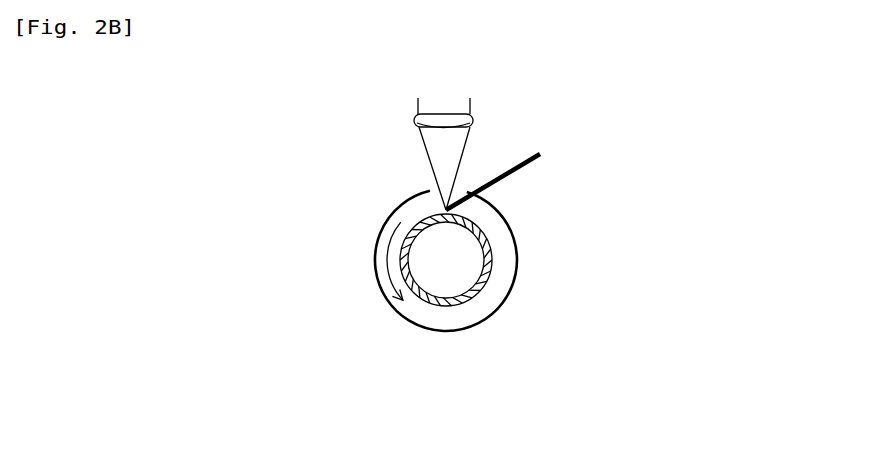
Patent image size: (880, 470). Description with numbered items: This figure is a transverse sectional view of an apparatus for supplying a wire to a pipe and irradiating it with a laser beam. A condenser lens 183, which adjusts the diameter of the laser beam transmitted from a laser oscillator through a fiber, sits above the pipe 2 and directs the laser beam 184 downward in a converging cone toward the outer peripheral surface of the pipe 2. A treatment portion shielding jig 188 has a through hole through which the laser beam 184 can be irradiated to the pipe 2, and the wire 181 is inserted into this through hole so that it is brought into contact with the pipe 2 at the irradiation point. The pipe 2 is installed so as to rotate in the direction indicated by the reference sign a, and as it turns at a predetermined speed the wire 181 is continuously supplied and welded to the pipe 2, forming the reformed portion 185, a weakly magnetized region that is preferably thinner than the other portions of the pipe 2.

The pipe 2 is at (497, 274).
The wire 181 is at (510, 175).
The condenser lens 183 is at (452, 120).
The laser beam 184 is at (440, 162).
The reformed portion 185 is at (440, 303).
The treatment portion shielding jig 188 is at (515, 245).
The rotation direction a is at (378, 248).